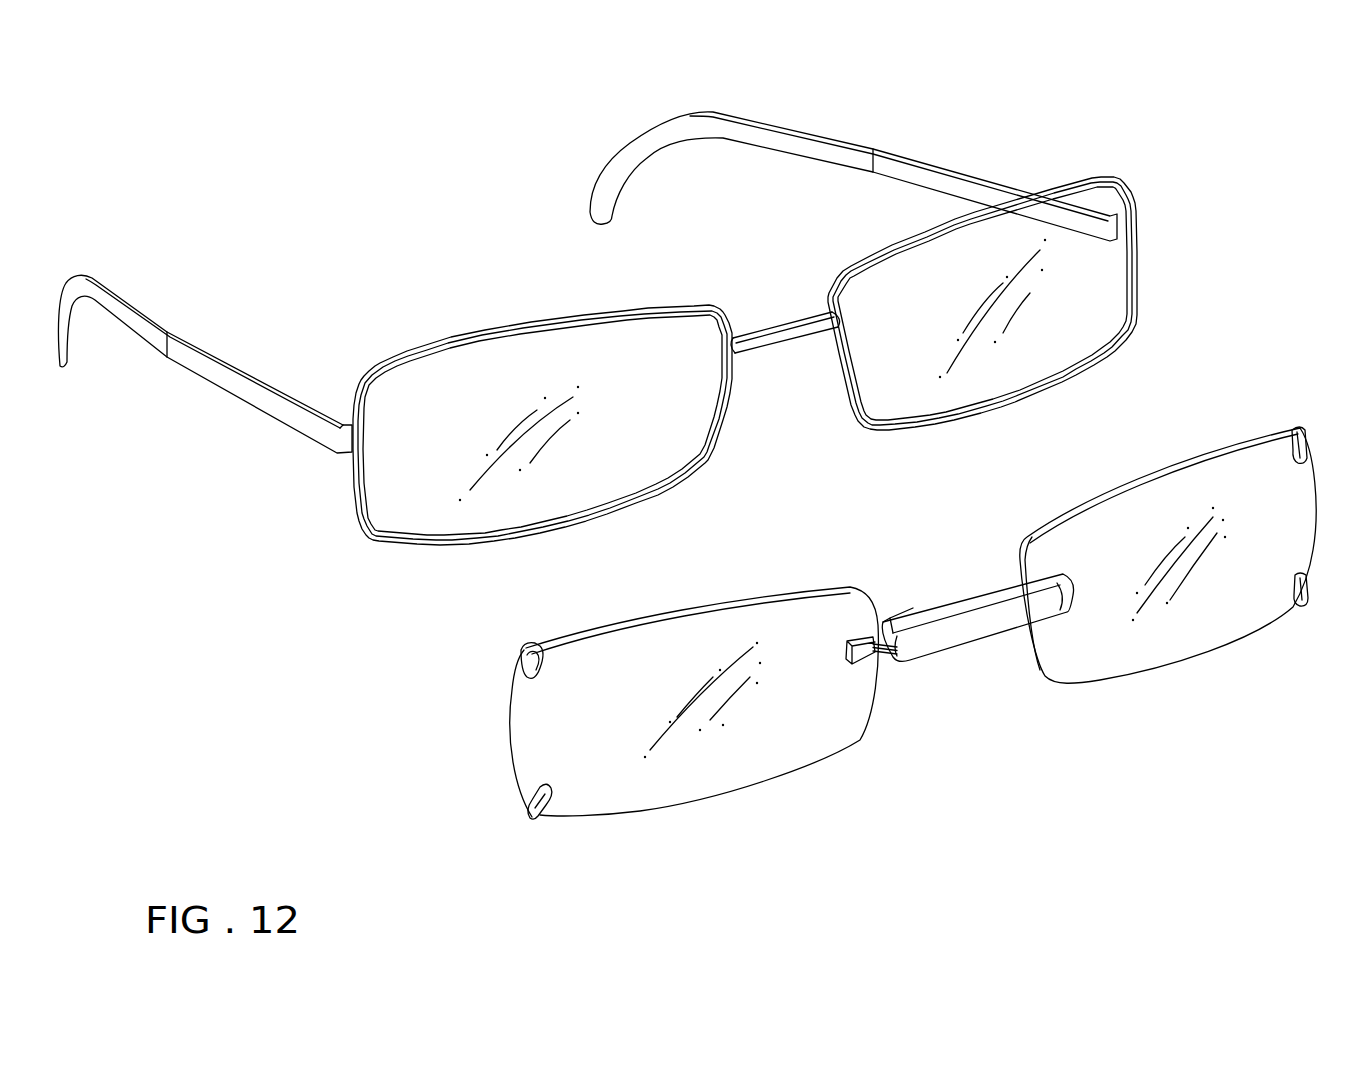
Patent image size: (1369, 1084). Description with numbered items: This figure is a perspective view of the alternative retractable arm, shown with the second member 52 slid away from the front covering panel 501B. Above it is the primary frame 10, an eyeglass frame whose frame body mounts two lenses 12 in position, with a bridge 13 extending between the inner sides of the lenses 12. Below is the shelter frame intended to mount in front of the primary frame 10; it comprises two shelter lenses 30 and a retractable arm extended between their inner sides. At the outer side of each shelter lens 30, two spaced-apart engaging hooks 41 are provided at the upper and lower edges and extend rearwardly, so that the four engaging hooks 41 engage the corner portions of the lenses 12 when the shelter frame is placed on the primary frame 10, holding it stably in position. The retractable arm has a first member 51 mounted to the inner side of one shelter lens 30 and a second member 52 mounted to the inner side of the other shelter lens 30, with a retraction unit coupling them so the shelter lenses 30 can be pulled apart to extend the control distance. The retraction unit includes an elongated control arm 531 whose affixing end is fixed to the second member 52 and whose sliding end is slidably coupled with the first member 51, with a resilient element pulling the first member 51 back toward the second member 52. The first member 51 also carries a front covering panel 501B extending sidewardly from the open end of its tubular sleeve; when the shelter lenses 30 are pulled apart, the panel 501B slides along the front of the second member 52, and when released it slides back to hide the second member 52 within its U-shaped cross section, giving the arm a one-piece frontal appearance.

The primary frame 10 is at (640, 300).
The lenses 12 is at (590, 395).
The bridge 13 is at (788, 333).
The shelter lenses 30 is at (680, 727).
The engaging hooks 41 is at (520, 660).
The first member 51 is at (1043, 617).
The second member 52 is at (877, 667).
The control arm 531 is at (898, 625).
The front covering panel 501B is at (970, 665).